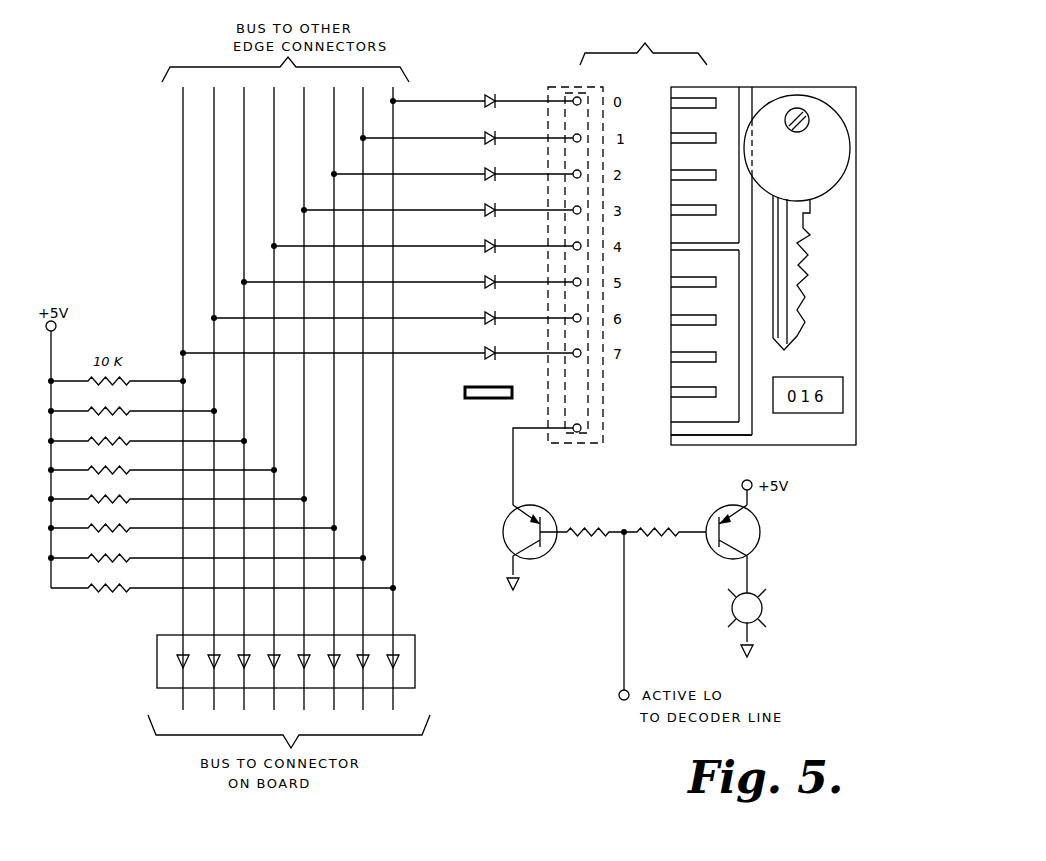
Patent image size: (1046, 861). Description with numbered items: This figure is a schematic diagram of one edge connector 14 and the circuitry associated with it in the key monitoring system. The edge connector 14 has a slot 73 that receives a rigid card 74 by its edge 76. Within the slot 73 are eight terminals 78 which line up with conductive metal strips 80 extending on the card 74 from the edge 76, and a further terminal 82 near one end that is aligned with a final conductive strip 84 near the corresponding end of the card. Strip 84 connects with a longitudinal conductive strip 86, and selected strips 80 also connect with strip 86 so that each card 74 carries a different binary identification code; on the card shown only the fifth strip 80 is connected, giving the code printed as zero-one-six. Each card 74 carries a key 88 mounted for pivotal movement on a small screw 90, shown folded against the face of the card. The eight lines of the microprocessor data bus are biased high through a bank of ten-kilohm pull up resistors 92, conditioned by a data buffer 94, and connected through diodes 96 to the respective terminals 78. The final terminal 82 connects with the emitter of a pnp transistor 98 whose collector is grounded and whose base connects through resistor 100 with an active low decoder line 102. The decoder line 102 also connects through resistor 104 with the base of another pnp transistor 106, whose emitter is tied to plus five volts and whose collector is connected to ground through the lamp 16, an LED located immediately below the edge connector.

The edge connector 14 is at (602, 442).
The lamp 16 is at (767, 604).
The slot 73 is at (581, 402).
The card 74 is at (850, 256).
The edge 76 is at (670, 336).
The terminals 78 is at (573, 133).
The conductive metal strips 80 is at (683, 136).
The terminal 82 is at (581, 433).
The conductive strip 84 is at (716, 430).
The longitudinal conductive strip 86 is at (745, 366).
The key 88 is at (812, 195).
The screw 90 is at (795, 108).
The pull up resistors 92 is at (107, 599).
The data buffer 94 is at (405, 648).
The diodes 96 is at (490, 72).
The pnp transistor 98 is at (541, 561).
The resistor 100 is at (610, 539).
The decoder line 102 is at (624, 646).
The resistor 104 is at (643, 539).
The pnp transistor 106 is at (737, 559).